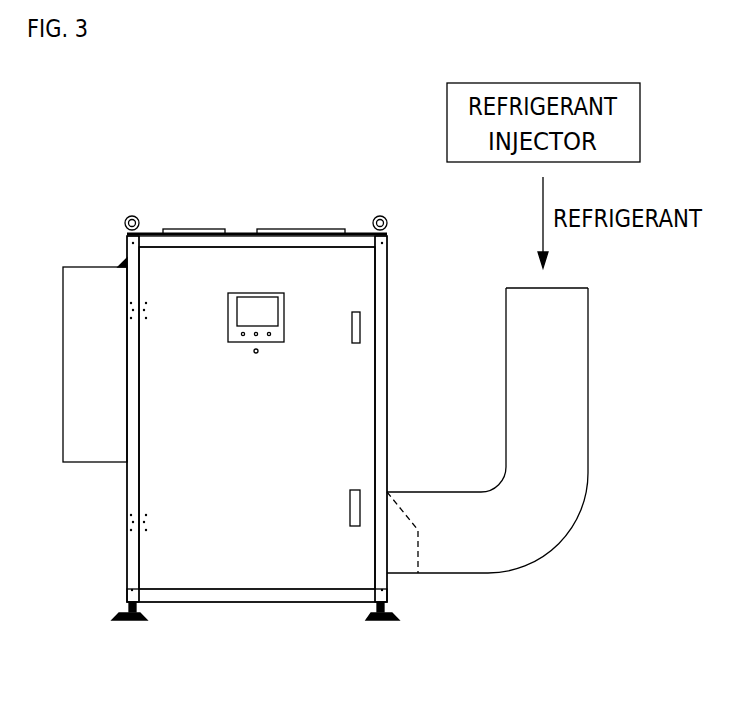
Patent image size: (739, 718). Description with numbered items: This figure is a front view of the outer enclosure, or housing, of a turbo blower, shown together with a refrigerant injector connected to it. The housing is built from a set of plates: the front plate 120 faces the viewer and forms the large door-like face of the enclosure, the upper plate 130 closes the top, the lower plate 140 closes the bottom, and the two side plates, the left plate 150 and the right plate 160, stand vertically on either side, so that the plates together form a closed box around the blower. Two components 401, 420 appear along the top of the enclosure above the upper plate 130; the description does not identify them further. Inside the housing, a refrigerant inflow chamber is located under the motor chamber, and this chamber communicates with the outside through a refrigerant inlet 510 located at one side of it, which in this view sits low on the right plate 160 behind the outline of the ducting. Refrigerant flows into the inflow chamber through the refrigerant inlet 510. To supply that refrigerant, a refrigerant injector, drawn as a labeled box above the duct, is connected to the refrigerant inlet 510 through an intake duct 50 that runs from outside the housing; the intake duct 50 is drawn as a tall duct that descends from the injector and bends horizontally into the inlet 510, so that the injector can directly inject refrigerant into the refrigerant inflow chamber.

The intake duct 50 is at (588, 415).
The front plate 120 is at (345, 432).
The upper plate 130 is at (238, 232).
The lower plate 140 is at (261, 595).
The left plate 150 is at (127, 553).
The right plate 160 is at (387, 385).
The first handle 401 is at (185, 229).
The second handle 420 is at (300, 229).
The refrigerant inlet 510 is at (418, 548).